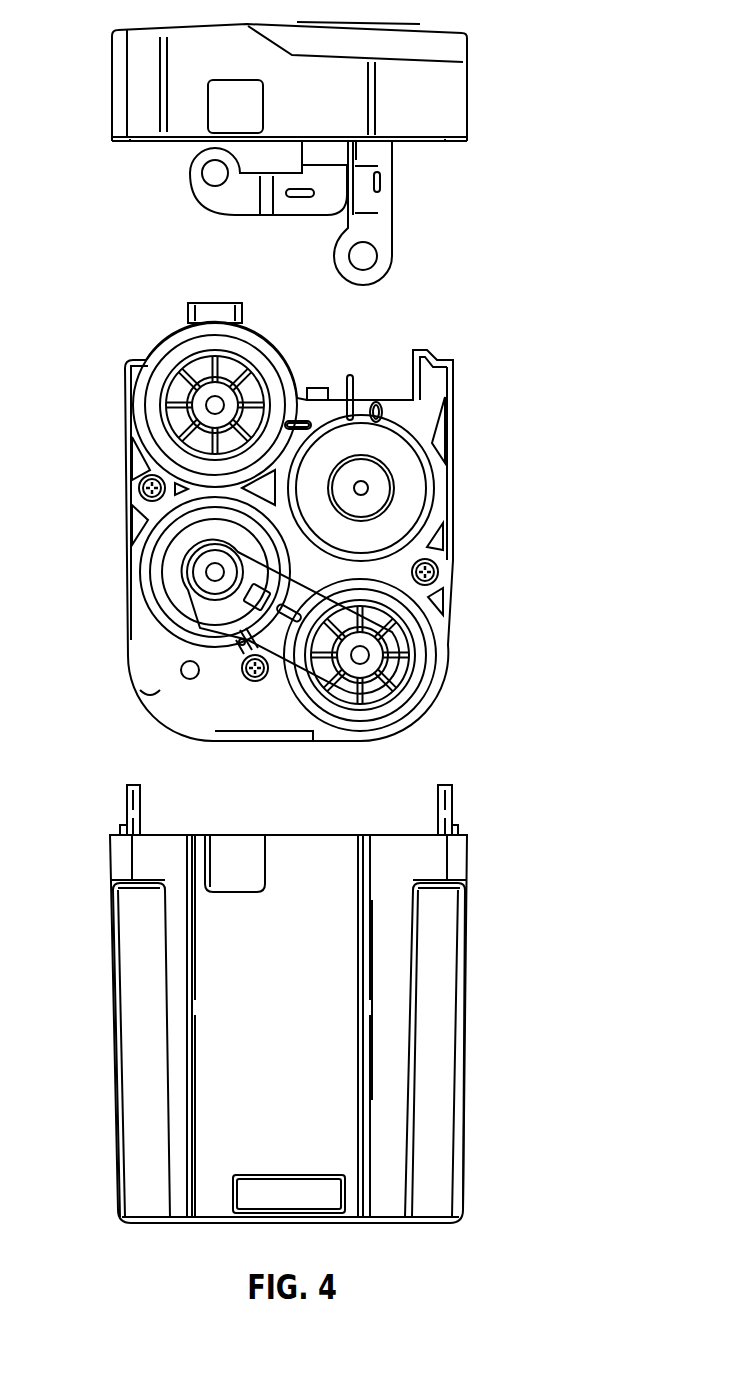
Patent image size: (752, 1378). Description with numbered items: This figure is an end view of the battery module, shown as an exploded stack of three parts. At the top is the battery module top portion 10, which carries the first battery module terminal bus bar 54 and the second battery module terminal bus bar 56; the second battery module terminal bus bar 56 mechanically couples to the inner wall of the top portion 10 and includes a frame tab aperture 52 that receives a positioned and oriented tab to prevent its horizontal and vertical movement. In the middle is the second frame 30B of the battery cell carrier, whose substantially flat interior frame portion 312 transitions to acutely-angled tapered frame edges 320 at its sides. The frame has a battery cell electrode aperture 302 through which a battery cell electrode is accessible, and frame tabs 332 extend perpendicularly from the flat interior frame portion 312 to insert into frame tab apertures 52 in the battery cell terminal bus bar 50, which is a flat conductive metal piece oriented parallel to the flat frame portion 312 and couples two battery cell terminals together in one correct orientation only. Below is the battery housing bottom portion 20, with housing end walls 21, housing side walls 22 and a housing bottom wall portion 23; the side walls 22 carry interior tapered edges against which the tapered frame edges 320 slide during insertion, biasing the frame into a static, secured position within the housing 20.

The battery module top portion 10 is at (495, 44).
The battery housing bottom portion 20 is at (303, 1037).
The housing end wall 21 is at (380, 1028).
The housing side wall 22 is at (114, 958).
The housing bottom wall portion 23 is at (188, 1225).
The second frame 30B is at (312, 493).
The battery cell electrode aperture 302 is at (433, 480).
The substantially flat interior frame portion 312 is at (153, 670).
The tapered frame edge 320 is at (448, 575).
The frame tab 332 is at (377, 402).
The battery cell terminal bus bar 50 is at (318, 640).
The frame tab aperture 52 is at (300, 197).
The first battery module terminal bus bar 54 is at (396, 215).
The second battery module terminal bus bar 56 is at (190, 182).